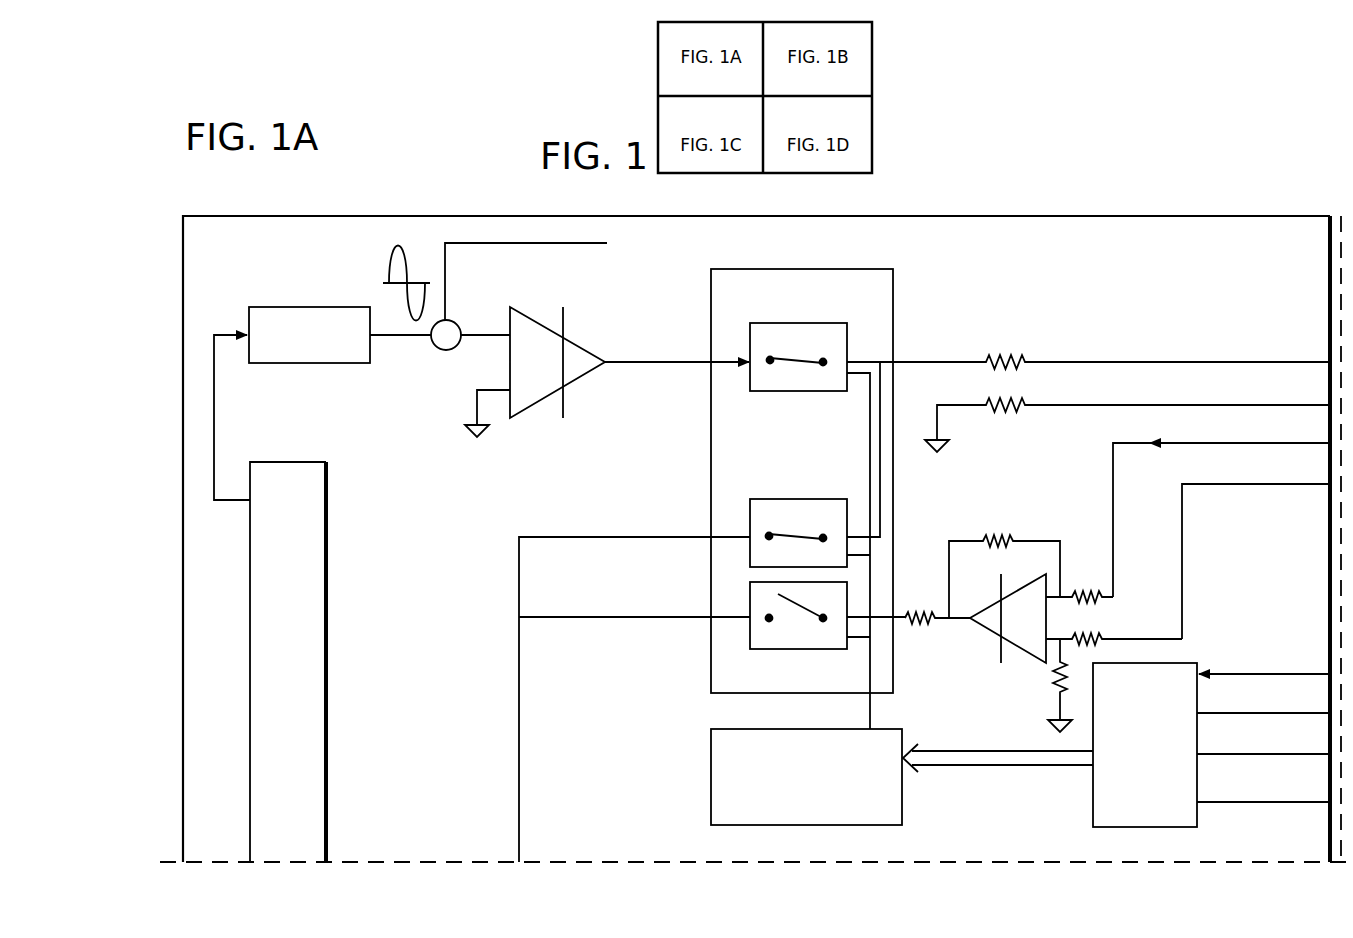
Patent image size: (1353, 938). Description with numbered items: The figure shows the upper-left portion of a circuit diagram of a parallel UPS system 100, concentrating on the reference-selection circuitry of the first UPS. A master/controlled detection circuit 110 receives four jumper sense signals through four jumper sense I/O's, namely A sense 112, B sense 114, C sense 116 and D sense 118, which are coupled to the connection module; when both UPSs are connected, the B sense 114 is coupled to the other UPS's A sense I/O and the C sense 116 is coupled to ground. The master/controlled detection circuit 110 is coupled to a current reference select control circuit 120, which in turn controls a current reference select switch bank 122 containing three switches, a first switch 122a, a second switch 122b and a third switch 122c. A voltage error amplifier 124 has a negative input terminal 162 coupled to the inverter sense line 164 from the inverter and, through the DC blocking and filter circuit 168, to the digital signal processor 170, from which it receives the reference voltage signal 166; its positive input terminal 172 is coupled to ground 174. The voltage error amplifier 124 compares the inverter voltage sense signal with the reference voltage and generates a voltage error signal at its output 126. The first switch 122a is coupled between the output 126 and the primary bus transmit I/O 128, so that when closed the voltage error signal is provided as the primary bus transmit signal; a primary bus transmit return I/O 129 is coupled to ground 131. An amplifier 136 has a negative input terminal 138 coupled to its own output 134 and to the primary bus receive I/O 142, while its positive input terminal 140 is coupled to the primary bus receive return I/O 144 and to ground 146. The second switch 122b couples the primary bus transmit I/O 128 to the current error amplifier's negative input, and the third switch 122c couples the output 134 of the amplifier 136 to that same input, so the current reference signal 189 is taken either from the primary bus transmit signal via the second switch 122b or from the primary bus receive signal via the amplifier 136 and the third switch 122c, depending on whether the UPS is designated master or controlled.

The parallel UPS system 100 is at (253, 229).
The master/controlled detection circuit 110 is at (1145, 745).
The A sense 112 is at (1210, 672).
The B sense 114 is at (1210, 711).
The C sense 116 is at (1210, 752).
The D sense 118 is at (1210, 800).
The current reference select control circuit 120 is at (710, 781).
The current reference select switch bank 122 is at (806, 268).
The SW1 122a is at (798, 322).
The SW2 122b is at (797, 498).
The SW3 122c is at (798, 650).
The voltage error amplifier (Vea) 124 is at (535, 408).
The output of the voltage error amplifier 126 is at (652, 365).
The primary bus transmit I/O 128 is at (1108, 360).
The primary bus transmit return I/O 129 is at (1098, 403).
The ground 131 is at (940, 455).
The output of the amplifier 134 is at (900, 621).
The amplifier 136 is at (1004, 599).
The negative input terminal of the amplifier 138 is at (1048, 590).
The positive input terminal of the amplifier 140 is at (1048, 637).
The primary bus receive I/O 142 is at (1132, 441).
The primary bus receive return I/O 144 is at (1254, 486).
The ground 146 is at (1052, 726).
The negative input terminal of the Vea 162 is at (507, 333).
The inverter sense line 164 is at (553, 244).
The reference voltage signal 166 is at (406, 337).
The DC blocking and filter circuit 168 is at (369, 364).
The Digital Signal Processor (DSP) 170 is at (288, 662).
The positive input terminal of the Vea 172 is at (507, 389).
The ground 174 is at (466, 431).
The current reference signal 189 is at (518, 700).